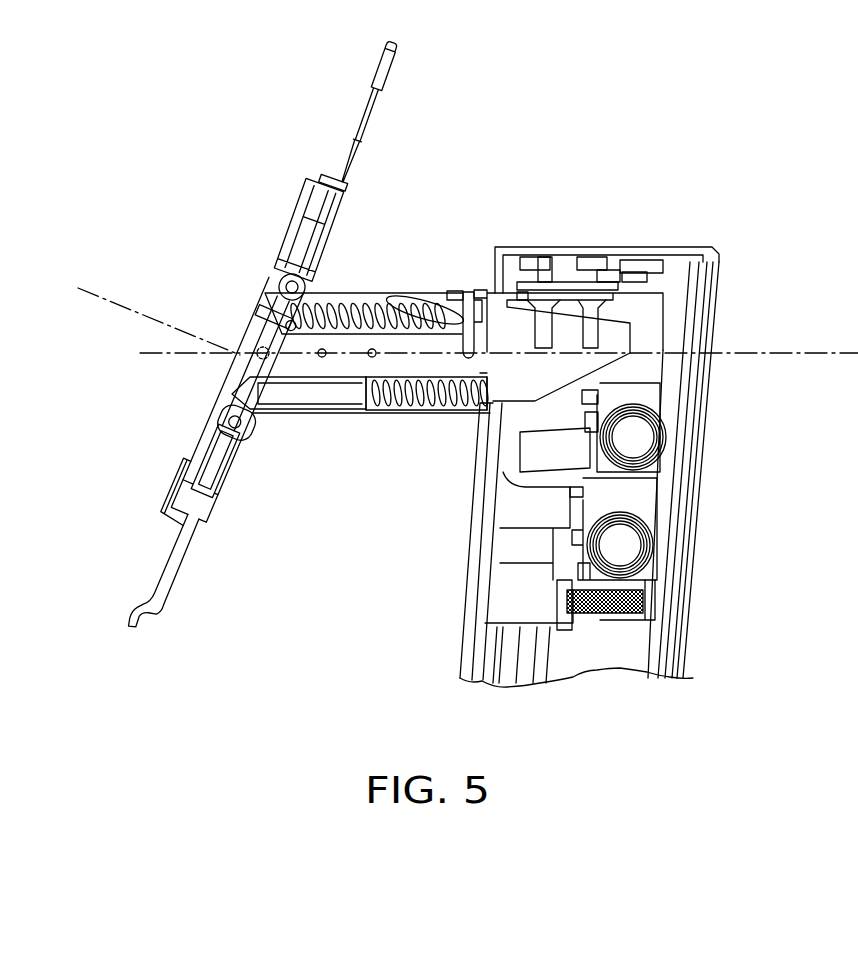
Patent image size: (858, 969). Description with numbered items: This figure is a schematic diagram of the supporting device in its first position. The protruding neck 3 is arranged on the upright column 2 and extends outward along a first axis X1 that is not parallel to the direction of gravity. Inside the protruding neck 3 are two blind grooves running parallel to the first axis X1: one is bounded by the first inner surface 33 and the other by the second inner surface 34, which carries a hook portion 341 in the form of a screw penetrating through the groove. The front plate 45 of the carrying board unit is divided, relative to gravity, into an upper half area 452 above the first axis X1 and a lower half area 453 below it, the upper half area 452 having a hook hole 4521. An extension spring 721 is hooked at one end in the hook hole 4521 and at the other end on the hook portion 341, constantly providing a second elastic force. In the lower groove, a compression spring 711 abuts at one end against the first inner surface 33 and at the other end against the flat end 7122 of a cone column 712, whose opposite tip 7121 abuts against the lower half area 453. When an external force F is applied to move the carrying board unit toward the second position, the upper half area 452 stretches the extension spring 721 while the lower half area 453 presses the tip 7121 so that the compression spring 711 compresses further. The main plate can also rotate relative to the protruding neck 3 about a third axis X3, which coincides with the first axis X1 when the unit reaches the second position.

The upright column 2 is at (704, 523).
The protruding neck 3 is at (427, 282).
The first inner surface 33 is at (381, 412).
The second inner surface 34 is at (348, 300).
The hook portion 341 is at (470, 290).
The front plate 45 is at (178, 488).
The upper half area 452 is at (260, 232).
The hook hole 4521 is at (264, 308).
The lower half area 453 is at (190, 414).
The compression spring 711 is at (437, 412).
The cone column 712 is at (397, 516).
The tip 7121 is at (262, 390).
The flat end 7122 is at (362, 392).
The extension spring 721 is at (391, 300).
The external force F is at (414, 52).
The first axis X1 is at (485, 354).
The third axis X3 is at (140, 312).